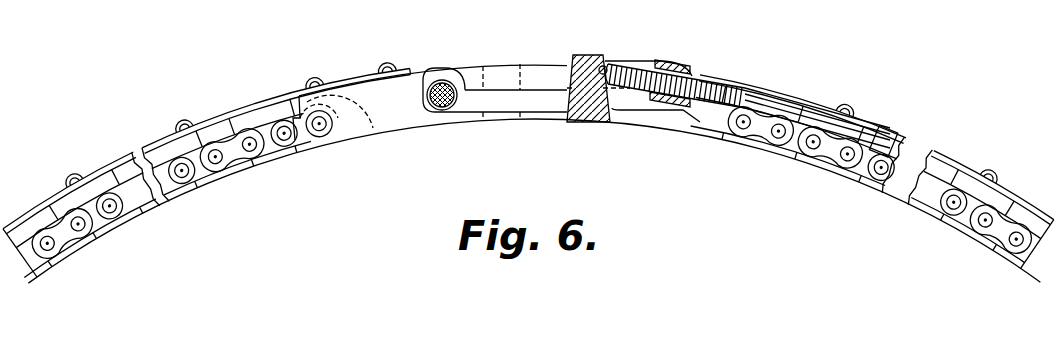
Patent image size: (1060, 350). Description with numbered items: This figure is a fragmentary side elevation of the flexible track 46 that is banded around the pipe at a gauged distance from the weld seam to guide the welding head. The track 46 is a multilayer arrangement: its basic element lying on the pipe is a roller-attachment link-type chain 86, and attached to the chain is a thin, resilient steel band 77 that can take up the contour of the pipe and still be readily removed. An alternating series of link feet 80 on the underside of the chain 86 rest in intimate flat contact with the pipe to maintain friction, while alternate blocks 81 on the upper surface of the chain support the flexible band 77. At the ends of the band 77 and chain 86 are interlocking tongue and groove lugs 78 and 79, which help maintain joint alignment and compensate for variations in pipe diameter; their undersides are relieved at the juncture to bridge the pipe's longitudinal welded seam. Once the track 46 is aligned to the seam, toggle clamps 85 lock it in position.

The flexible track 46 is at (346, 74).
The band 77 is at (930, 148).
The tongue and groove lug 78 is at (402, 115).
The tongue and groove lug 79 is at (672, 118).
The link feet 80 is at (245, 176).
The blocks 81 is at (255, 112).
The toggle clamps 85 is at (768, 107).
The roller-attachment link-type chain 86 is at (832, 157).